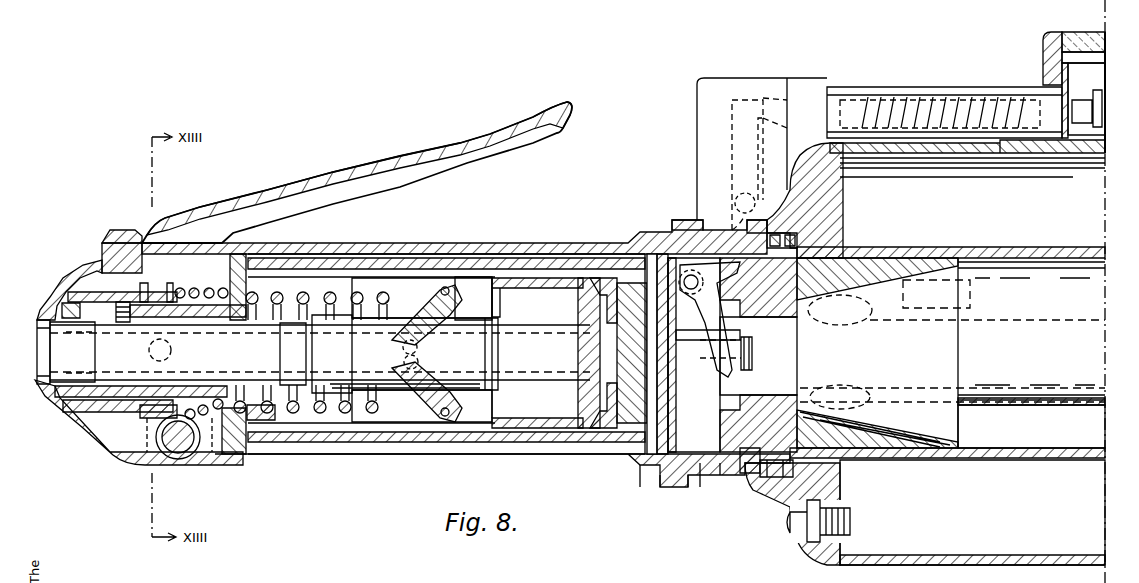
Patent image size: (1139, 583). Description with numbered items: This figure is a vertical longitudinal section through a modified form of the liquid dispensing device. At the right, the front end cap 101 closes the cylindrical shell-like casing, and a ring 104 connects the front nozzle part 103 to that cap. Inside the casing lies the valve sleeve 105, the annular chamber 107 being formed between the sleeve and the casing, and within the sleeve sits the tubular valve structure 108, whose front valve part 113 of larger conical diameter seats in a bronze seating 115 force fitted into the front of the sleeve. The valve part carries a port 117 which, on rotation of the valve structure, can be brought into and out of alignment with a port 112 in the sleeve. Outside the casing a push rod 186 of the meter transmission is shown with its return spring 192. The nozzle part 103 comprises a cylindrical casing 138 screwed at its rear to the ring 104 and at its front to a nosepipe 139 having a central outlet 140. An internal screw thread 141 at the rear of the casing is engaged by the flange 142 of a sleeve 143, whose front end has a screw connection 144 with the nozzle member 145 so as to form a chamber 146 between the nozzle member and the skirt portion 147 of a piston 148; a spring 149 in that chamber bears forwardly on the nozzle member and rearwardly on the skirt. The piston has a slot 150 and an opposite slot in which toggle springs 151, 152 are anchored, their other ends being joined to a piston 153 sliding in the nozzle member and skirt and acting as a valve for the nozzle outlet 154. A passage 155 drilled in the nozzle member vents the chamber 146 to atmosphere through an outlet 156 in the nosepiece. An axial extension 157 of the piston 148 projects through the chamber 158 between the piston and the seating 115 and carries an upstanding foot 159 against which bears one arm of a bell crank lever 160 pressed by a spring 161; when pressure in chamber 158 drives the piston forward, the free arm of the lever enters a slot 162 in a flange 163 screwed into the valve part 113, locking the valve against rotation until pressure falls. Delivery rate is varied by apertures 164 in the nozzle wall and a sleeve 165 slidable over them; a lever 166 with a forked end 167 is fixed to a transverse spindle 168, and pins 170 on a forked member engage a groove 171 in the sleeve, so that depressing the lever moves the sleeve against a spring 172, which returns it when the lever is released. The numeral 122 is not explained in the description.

The front end cap 101 is at (778, 492).
The front nozzle part 103 is at (466, 347).
The ring 104 is at (688, 222).
The valve sleeve 105 is at (1010, 250).
The annular chamber 107 is at (972, 512).
The tubular valve structure 108 is at (1028, 332).
The port 112 is at (846, 392).
The front valve part 113 is at (960, 366).
The seating 115 is at (880, 270).
The port 117 is at (846, 327).
The chamber 122 is at (1031, 423).
The cylindrical casing 138 is at (486, 258).
The nosepipe 139 is at (114, 236).
The central outlet 140 is at (41, 352).
The internal screw thread 141 is at (692, 480).
The flange 142 is at (662, 468).
The sleeve 143 is at (398, 443).
The screw connection 144 is at (300, 442).
The nozzle member 145 is at (245, 454).
The chamber 146 is at (352, 432).
The skirt portion 147 is at (537, 353).
The piston 148 is at (597, 345).
The spring 149 is at (372, 494).
The slot 150 is at (452, 378).
The toggle spring 151 is at (436, 286).
The toggle spring 152 is at (440, 432).
The piston 153 is at (405, 354).
The nozzle outlet 154 is at (50, 360).
The passage 155 is at (120, 425).
The outlet 156 is at (56, 297).
The axial extension 157 is at (694, 350).
The chamber 158 is at (702, 374).
The upstanding foot 159 is at (753, 348).
The bell crank lever 160 is at (712, 339).
The spring 161 is at (685, 300).
The slot 162 is at (740, 323).
The flange 163 is at (740, 393).
The apertures 164 is at (90, 292).
The sleeve 165 is at (140, 300).
The lever 166 is at (422, 152).
The forked end 167 is at (320, 354).
The spindle 168 is at (182, 459).
The pins 170 is at (172, 350).
The groove 171 is at (176, 300).
The spring 172 is at (212, 440).
The push rod 186 is at (810, 110).
The return spring 192 is at (906, 110).